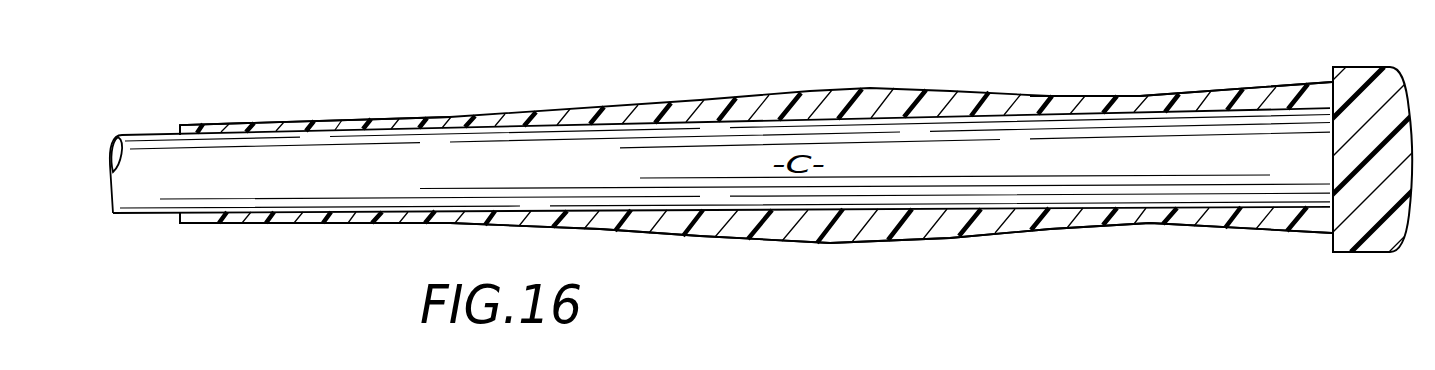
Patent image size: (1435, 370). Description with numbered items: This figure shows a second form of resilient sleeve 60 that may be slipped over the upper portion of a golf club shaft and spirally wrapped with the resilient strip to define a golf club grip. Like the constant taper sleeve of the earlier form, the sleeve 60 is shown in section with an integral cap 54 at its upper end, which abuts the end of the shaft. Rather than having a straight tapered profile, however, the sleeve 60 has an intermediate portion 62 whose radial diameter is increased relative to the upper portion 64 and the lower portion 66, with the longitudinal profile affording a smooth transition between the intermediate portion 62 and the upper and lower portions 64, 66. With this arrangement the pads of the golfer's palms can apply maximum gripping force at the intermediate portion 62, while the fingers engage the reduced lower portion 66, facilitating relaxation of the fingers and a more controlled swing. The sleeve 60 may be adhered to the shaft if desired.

The integral cap 54 is at (1362, 77).
The resilient sleeve 60 is at (864, 88).
The intermediate portion 62 is at (834, 233).
The upper portion 64 is at (1140, 100).
The lower portion 66 is at (278, 127).